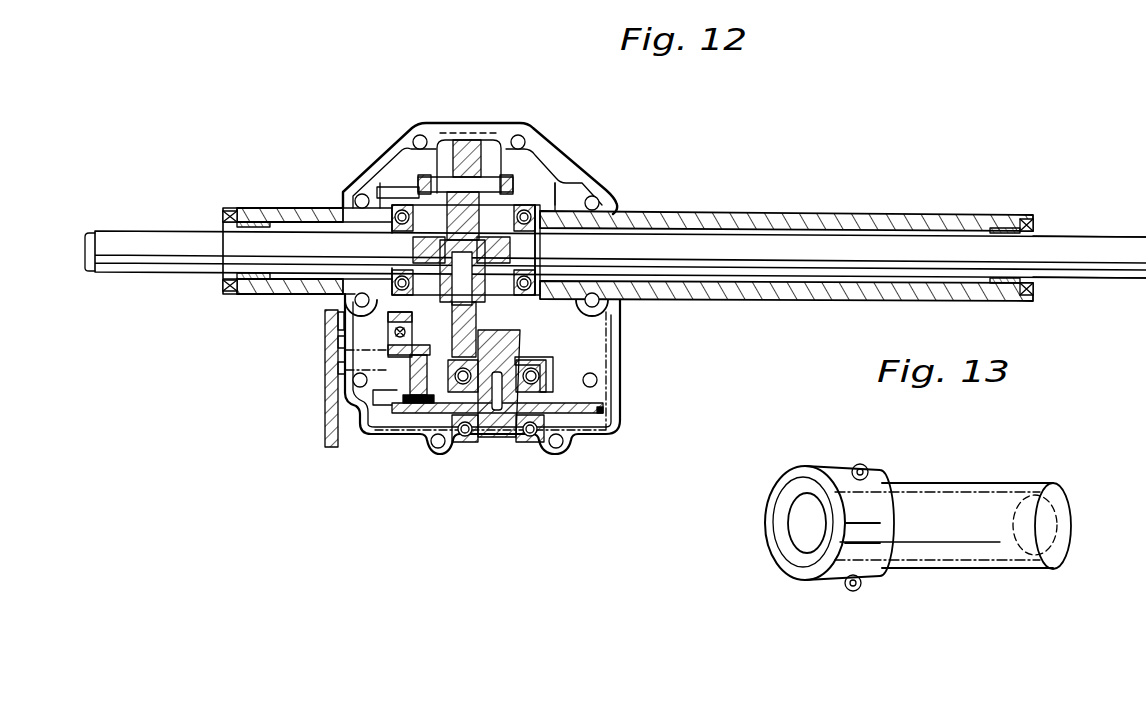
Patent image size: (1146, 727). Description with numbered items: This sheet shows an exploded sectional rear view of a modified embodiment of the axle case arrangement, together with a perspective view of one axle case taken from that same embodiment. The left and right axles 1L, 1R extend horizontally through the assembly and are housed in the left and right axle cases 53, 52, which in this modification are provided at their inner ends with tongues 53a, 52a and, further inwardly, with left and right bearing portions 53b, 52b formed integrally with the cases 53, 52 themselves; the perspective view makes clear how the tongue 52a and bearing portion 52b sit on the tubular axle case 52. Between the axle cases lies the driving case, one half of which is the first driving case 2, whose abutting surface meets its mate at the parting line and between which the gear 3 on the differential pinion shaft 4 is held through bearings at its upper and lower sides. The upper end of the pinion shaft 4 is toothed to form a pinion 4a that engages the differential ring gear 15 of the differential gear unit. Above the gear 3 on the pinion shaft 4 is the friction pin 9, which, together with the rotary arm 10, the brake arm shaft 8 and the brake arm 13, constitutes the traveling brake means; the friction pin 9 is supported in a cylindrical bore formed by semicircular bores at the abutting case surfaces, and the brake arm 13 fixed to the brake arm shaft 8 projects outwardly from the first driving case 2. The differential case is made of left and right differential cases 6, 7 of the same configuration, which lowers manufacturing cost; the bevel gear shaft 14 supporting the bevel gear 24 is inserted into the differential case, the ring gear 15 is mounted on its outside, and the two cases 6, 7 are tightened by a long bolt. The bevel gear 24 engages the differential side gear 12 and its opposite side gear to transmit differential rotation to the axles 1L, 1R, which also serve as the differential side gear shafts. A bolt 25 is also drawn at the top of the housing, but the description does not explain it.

In FIG. 12, the left axle 1L is at (162, 237).
In FIG. 12, the right axle 1R is at (1078, 240).
In FIG. 12, the first driving case 2 is at (585, 172).
In FIG. 12, the gear 3 is at (620, 410).
In FIG. 12, the differential pinion shaft 4 is at (497, 440).
In FIG. 12, the pinion 4a is at (543, 356).
In FIG. 12, the left differential case 6 is at (390, 313).
In FIG. 12, the right differential case 7 is at (500, 312).
In FIG. 12, the brake arm shaft 8 is at (400, 357).
In FIG. 12, the friction pin 9 is at (407, 370).
In FIG. 12, the rotary arm 10 is at (380, 368).
In FIG. 12, the differential side gear 12 is at (438, 183).
In FIG. 12, the brake arm 13 is at (327, 440).
In FIG. 12, the bevel gear shaft 14 is at (505, 350).
In FIG. 12, the differential ring gear 15 is at (340, 338).
In FIG. 12, the bevel gear 24 is at (540, 250).
In FIG. 12, the bolt 25 is at (463, 187).
In FIG. 12, the axle case 52 is at (833, 217).
In FIG. 13, the axle case 52 is at (1005, 484).
In FIG. 12, the tongue 52a is at (615, 203).
In FIG. 13, the tongue 52a is at (870, 472).
In FIG. 12, the bearing portion 52b is at (540, 180).
In FIG. 13, the bearing portion 52b is at (833, 467).
In FIG. 12, the axle case 53 is at (265, 207).
In FIG. 12, the tongue 53a is at (347, 190).
In FIG. 12, the bearing portion 53b is at (382, 172).